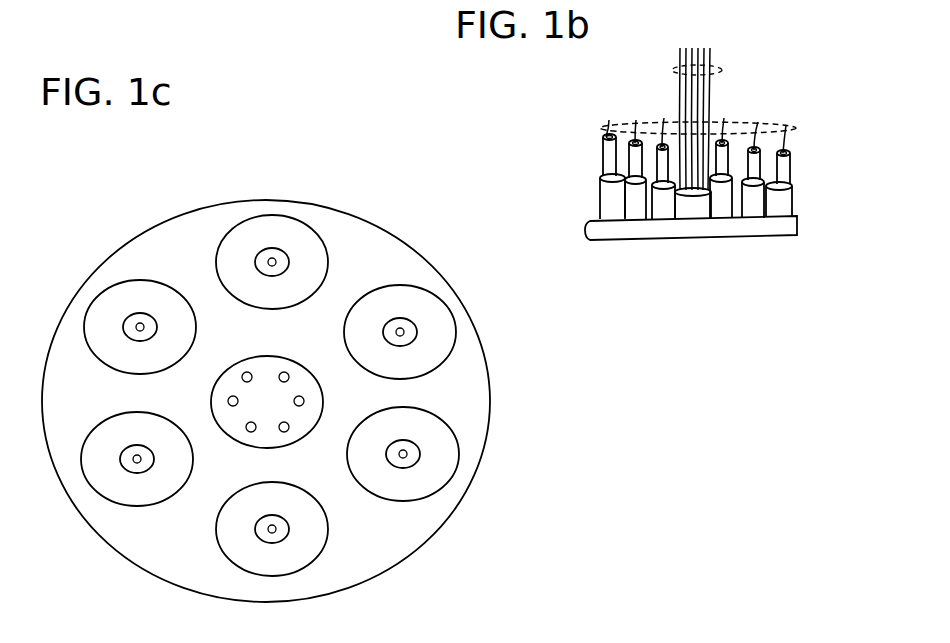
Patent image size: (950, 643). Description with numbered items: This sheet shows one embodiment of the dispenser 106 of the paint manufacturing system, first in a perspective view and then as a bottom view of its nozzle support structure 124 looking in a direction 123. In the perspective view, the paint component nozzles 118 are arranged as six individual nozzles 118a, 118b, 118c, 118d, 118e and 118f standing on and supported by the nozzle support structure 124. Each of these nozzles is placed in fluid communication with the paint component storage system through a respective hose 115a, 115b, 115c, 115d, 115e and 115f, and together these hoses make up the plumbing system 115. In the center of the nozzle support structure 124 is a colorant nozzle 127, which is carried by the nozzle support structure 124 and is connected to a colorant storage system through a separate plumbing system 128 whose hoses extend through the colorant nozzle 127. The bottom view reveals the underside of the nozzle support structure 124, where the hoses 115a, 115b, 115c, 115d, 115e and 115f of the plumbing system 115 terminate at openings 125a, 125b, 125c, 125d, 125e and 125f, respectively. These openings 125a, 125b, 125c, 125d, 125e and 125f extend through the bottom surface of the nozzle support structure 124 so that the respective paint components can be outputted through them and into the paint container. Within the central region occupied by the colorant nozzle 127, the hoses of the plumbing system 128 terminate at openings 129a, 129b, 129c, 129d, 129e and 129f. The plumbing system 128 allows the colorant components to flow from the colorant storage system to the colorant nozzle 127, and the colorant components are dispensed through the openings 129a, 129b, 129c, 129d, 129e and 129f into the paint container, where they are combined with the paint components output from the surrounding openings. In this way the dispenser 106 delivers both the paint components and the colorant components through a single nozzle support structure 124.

In FIG. 1c, the dispenser 106 is at (178, 198).
In FIG. 1b, the dispenser 106 is at (534, 126).
In FIG. 1b, the plumbing system 115 is at (721, 101).
In FIG. 1b, the hose 115a is at (609, 136).
In FIG. 1b, the hose 115b is at (636, 142).
In FIG. 1b, the hose 115c is at (663, 146).
In FIG. 1b, the hose 115d is at (722, 142).
In FIG. 1b, the hose 115e is at (755, 149).
In FIG. 1b, the hose 115f is at (784, 152).
In FIG. 1b, the paint component nozzles 118 is at (709, 233).
In FIG. 1b, the paint component nozzle 118a is at (602, 199).
In FIG. 1b, the paint component nozzle 118b is at (638, 212).
In FIG. 1b, the paint component nozzle 118c is at (664, 212).
In FIG. 1b, the paint component nozzle 118d is at (722, 210).
In FIG. 1b, the paint component nozzle 118e is at (750, 210).
In FIG. 1b, the paint component nozzle 118f is at (780, 210).
In FIG. 1b, the direction 123 is at (680, 314).
In FIG. 1c, the nozzle support structure 124 is at (458, 390).
In FIG. 1b, the nozzle support structure 124 is at (797, 228).
In FIG. 1c, the opening 125a is at (140, 320).
In FIG. 1c, the opening 125b is at (137, 464).
In FIG. 1c, the opening 125c is at (272, 258).
In FIG. 1c, the opening 125d is at (274, 534).
In FIG. 1c, the opening 125e is at (405, 459).
In FIG. 1c, the opening 125f is at (400, 328).
In FIG. 1c, the colorant nozzle 127 is at (300, 385).
In FIG. 1b, the colorant nozzle 127 is at (693, 212).
In FIG. 1b, the plumbing system 128 is at (718, 66).
In FIG. 1c, the opening 129a is at (229, 402).
In FIG. 1c, the opening 129b is at (247, 372).
In FIG. 1c, the opening 129c is at (284, 372).
In FIG. 1c, the opening 129d is at (303, 402).
In FIG. 1c, the opening 129e is at (284, 432).
In FIG. 1c, the opening 129f is at (251, 432).